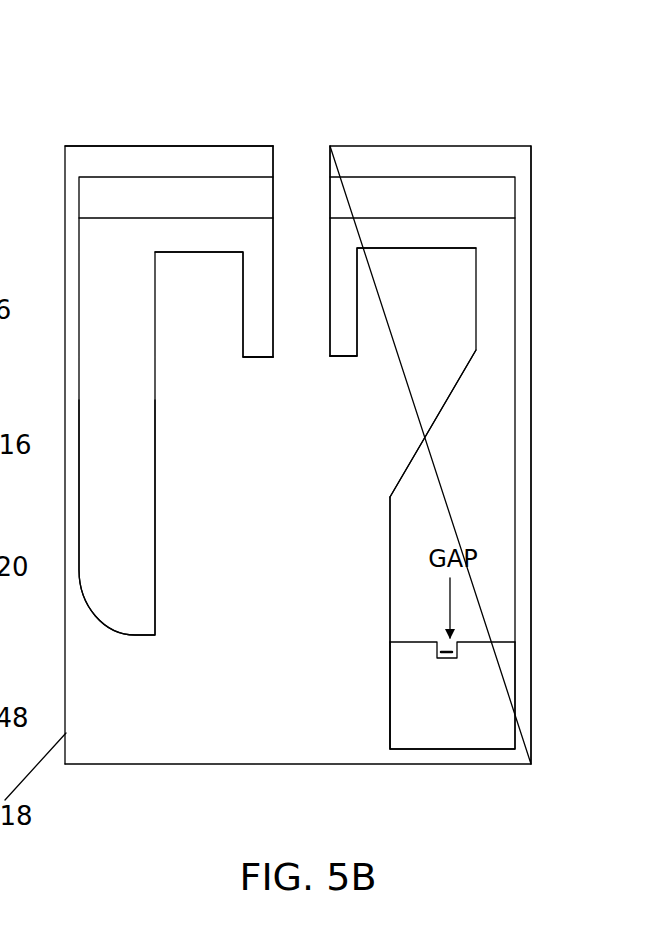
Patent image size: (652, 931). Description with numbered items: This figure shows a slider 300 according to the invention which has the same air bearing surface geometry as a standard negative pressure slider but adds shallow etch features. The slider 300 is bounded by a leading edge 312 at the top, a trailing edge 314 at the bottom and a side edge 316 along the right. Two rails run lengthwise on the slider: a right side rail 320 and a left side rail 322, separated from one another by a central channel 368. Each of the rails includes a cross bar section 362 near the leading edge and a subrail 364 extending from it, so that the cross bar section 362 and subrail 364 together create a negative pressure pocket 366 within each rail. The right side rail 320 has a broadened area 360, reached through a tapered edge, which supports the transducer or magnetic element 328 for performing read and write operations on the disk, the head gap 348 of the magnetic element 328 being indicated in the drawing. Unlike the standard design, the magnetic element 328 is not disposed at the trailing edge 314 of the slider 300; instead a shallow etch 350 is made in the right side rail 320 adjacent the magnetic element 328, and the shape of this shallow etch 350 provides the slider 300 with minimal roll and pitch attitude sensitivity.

The slider 300 is at (447, 117).
The leading edge 312 is at (238, 146).
The trailing edge 314 is at (417, 764).
The side edge 316 is at (533, 405).
The right side rail 320 is at (492, 472).
The left side rail 322 is at (117, 555).
The magnetic element 328 is at (436, 652).
The head gap 348 is at (450, 647).
The shallow etch 350 is at (480, 667).
The broadened area 360 is at (390, 523).
The cross bar section 362 is at (207, 252).
The subrail 364 is at (258, 358).
The negative pressure pocket 366 is at (182, 285).
The channel 368 is at (303, 220).